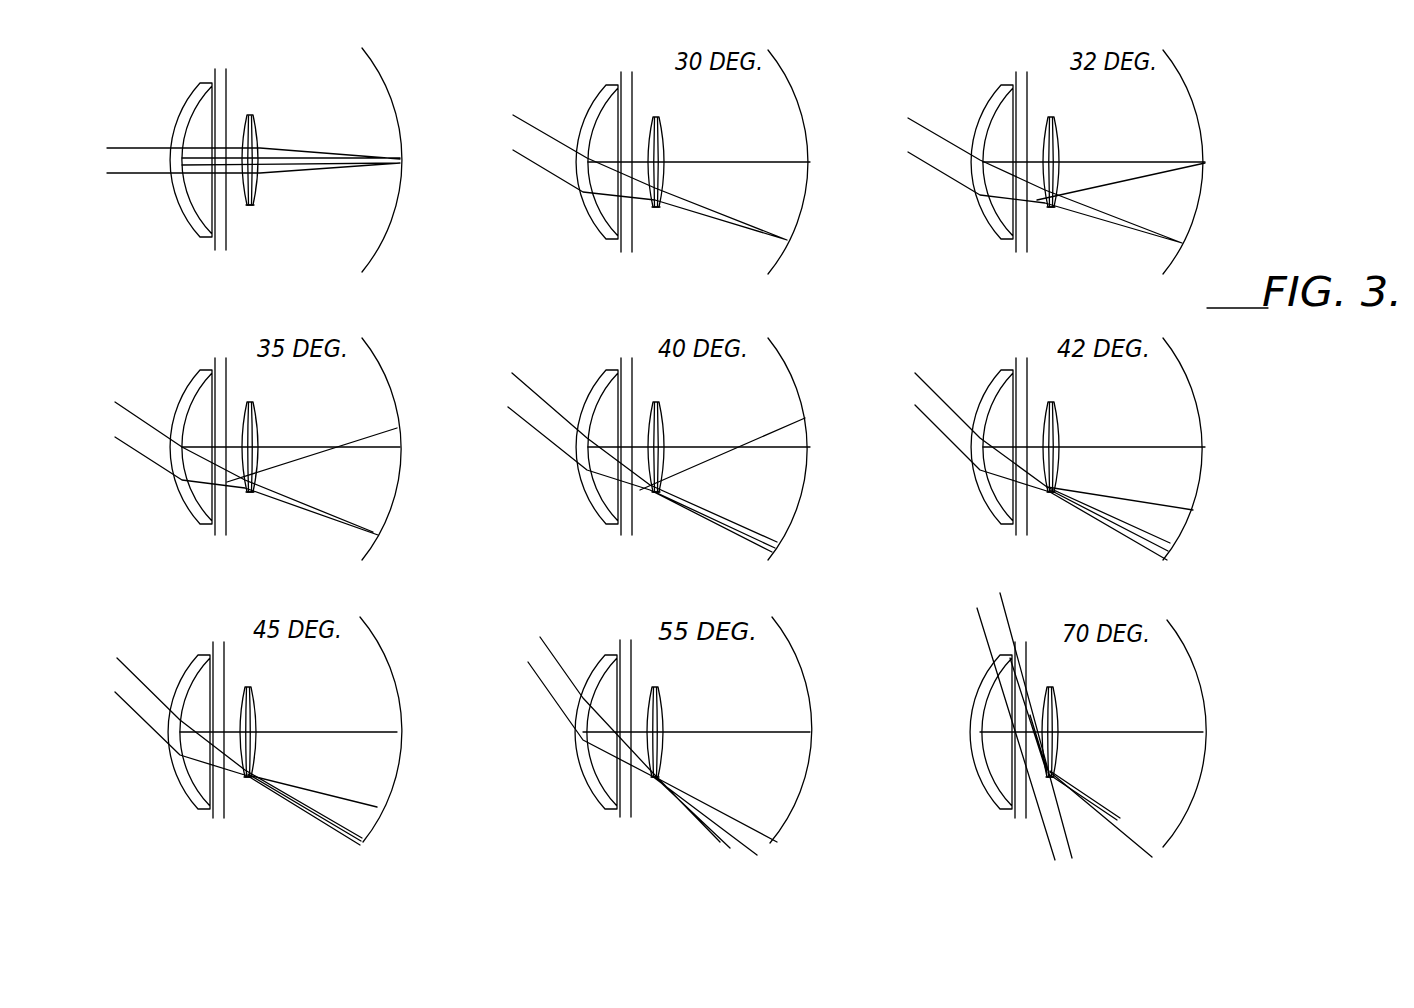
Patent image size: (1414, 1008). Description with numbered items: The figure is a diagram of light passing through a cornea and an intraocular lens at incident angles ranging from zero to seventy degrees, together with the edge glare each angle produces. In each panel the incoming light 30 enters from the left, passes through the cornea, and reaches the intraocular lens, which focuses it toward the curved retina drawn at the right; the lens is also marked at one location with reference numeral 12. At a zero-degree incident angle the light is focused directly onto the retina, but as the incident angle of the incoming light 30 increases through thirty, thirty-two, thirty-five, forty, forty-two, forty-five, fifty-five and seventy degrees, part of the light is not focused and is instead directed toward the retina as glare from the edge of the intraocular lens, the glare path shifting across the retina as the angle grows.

The lens element 12 is at (263, 178).
The incoming light 30 is at (150, 175).